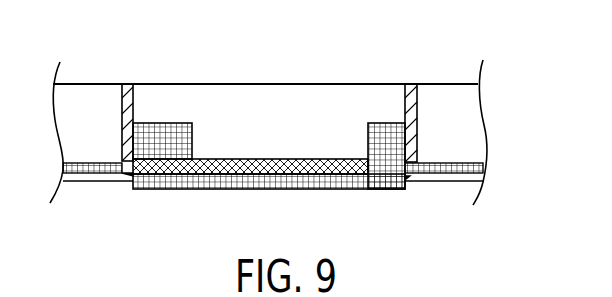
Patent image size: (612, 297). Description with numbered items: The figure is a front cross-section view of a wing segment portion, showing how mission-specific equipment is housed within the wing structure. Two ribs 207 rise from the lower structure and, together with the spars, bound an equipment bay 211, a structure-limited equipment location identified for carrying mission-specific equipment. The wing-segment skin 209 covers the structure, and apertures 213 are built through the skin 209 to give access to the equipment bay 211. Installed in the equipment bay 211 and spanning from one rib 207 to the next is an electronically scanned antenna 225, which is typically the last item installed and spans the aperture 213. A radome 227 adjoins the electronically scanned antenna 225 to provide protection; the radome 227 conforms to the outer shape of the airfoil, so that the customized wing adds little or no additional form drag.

The rib 207 is at (130, 93).
The skin 209 is at (433, 84).
The equipment bay 211 is at (220, 100).
The aperture 213 is at (407, 183).
The electronically scanned antenna 225 is at (295, 163).
The radome 227 is at (311, 180).